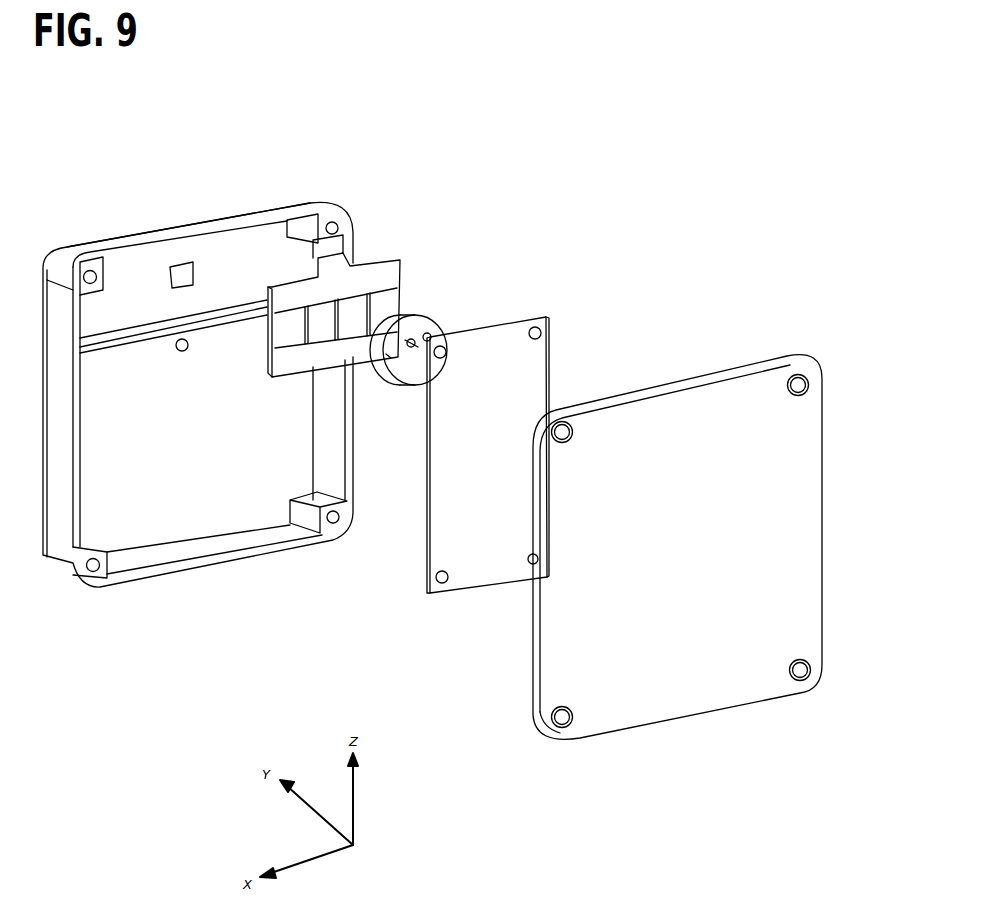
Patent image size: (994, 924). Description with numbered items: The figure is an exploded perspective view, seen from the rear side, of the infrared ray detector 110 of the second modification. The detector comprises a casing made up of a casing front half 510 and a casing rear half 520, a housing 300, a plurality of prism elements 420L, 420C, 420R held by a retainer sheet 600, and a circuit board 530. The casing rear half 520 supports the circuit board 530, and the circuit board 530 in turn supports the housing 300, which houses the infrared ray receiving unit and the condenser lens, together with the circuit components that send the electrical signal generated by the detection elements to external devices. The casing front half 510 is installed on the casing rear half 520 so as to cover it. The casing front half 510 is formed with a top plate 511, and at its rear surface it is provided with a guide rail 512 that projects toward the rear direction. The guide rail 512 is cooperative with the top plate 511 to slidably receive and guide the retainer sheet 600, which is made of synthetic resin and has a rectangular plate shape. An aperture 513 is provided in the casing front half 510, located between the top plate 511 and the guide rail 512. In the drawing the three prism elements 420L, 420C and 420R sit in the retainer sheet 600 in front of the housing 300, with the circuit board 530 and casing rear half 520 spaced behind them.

The infrared ray detector 110 is at (565, 113).
The housing 300 is at (403, 315).
The prism element 420L is at (288, 327).
The prism element 420C is at (313, 327).
The prism element 420R is at (352, 317).
The casing front half 510 is at (220, 553).
The top plate 511 is at (118, 245).
The guide rail 512 is at (217, 300).
The aperture 513 is at (180, 262).
The casing rear half 520 is at (677, 655).
The circuit board 530 is at (490, 353).
The retainer sheet 600 is at (387, 277).